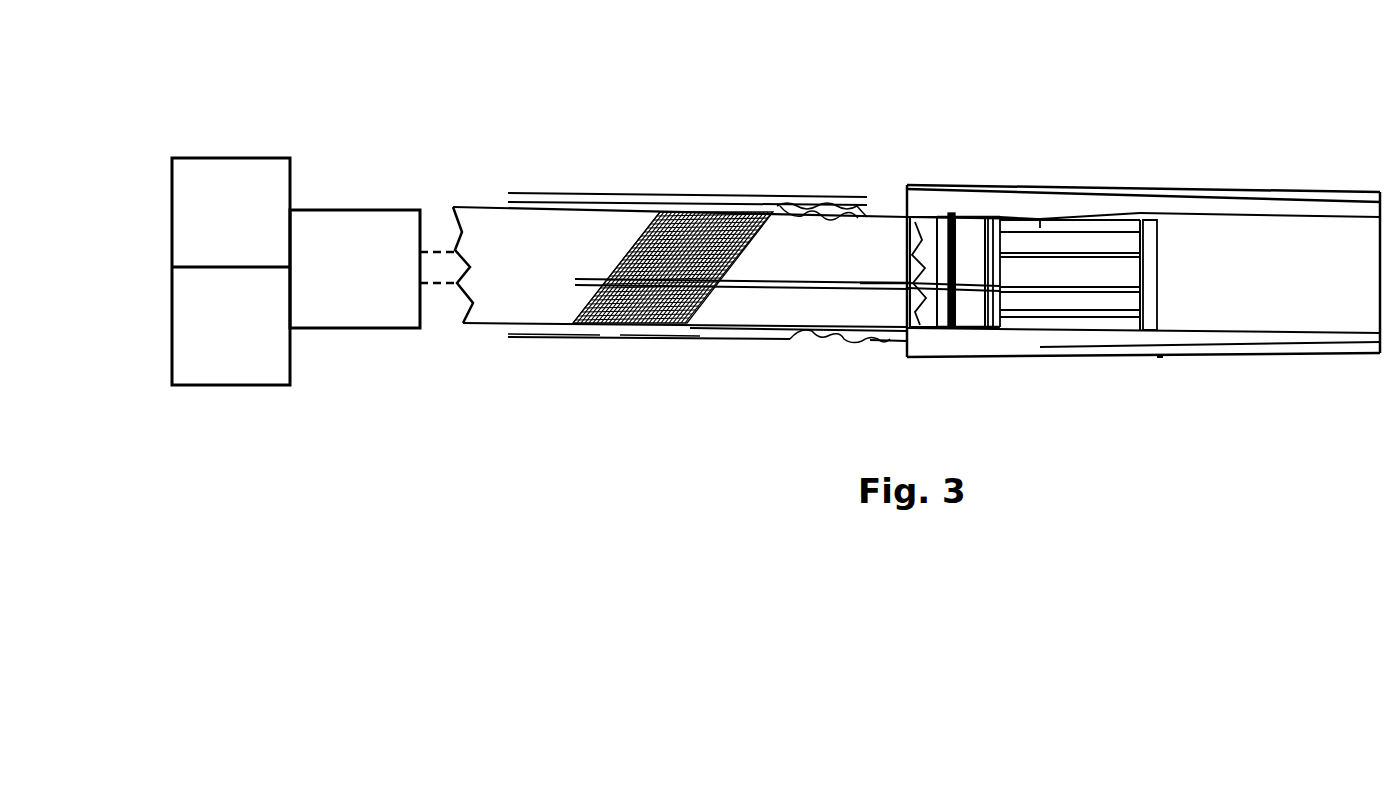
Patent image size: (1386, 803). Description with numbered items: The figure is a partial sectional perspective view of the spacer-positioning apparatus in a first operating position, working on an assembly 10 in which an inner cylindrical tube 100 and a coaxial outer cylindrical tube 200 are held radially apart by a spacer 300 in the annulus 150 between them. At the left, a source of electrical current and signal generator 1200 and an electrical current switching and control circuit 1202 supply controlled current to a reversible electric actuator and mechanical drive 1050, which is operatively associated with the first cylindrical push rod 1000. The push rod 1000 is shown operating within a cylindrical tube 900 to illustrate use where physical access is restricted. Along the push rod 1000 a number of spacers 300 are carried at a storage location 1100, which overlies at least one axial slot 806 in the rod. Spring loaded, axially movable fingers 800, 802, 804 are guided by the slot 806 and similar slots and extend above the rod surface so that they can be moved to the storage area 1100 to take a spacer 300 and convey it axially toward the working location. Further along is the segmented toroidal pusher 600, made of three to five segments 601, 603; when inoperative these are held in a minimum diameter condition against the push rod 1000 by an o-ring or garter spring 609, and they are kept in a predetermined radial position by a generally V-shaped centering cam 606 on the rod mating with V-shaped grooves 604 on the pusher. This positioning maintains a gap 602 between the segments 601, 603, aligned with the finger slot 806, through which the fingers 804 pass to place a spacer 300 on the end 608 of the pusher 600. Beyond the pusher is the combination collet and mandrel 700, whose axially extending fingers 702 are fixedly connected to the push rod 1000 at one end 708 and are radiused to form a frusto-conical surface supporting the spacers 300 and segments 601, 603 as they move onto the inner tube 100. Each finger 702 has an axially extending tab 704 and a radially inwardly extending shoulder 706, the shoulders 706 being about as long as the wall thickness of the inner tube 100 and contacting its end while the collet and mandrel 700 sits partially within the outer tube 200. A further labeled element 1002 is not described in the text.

The source of electrical current and signal generator 1200 is at (225, 155).
The switching and control circuit 1202 is at (292, 363).
The reversible electric actuator and mechanical drive 1050 is at (351, 208).
The storage location 1100 is at (615, 265).
The V-shaped centering cam 606 is at (867, 217).
The V-shaped grooves 604 is at (907, 242).
The piston cap 1002 is at (925, 215).
The pusher segment 603 is at (943, 220).
The o-ring or garter spring 609 is at (954, 222).
The axially movable finger 800 is at (965, 233).
The end of the pusher 608 is at (978, 237).
The end of collet and mandrel fingers 708 is at (985, 235).
The combination collet and mandrel 700 is at (1073, 207).
The collet and mandrel finger 702 is at (1098, 240).
The axially extending tab 704 is at (1140, 270).
The radial shoulder 706 is at (1160, 230).
The annulus 150 is at (1333, 208).
The cylindrical tube 900 is at (610, 338).
The axial slot 806 is at (747, 284).
The first cylindrical push rod 1000 is at (800, 289).
The axially movable finger 804 is at (908, 284).
The spring loaded finger 802 is at (873, 330).
The spacer 300 is at (907, 320).
The pusher segment 601 is at (950, 324).
The segmented toroidal pusher 600 is at (963, 324).
The gap 602 is at (985, 292).
The assembly 10 is at (1160, 368).
The inner cylindrical tube 100 is at (1262, 336).
The outer cylindrical tube 200 is at (1330, 350).